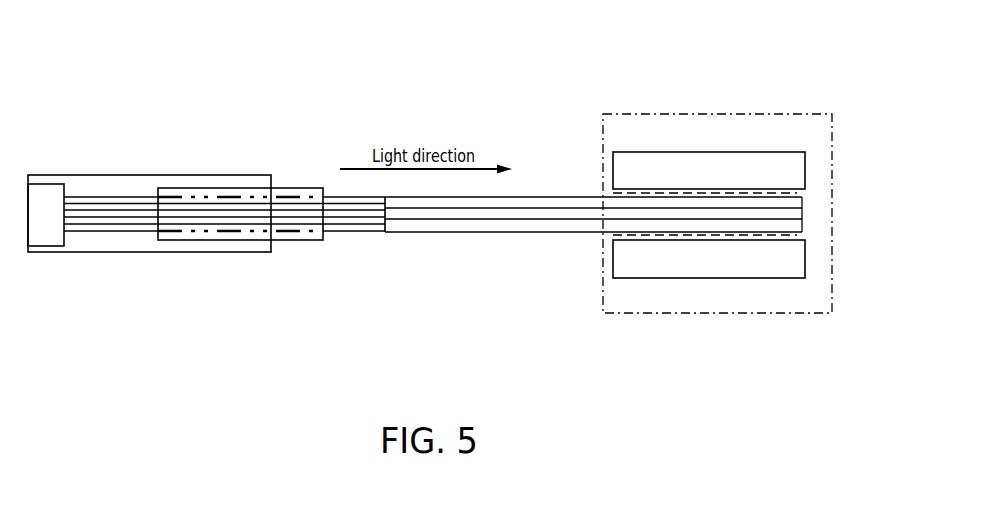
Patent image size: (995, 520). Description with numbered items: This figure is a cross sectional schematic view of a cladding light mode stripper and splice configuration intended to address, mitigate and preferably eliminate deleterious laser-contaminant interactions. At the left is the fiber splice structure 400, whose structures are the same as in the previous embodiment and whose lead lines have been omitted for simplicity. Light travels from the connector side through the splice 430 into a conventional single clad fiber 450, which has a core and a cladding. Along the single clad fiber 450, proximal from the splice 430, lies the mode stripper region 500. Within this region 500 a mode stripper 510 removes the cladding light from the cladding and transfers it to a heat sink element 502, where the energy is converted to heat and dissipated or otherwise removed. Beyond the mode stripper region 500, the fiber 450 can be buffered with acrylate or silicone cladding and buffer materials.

The fiber splice structure 400 is at (168, 279).
The splice 430 is at (385, 233).
The single clad fiber 450 is at (496, 233).
The mode stripper region 500 is at (750, 159).
The heat sink element 502 is at (689, 182).
The mode stripper 510 is at (797, 192).